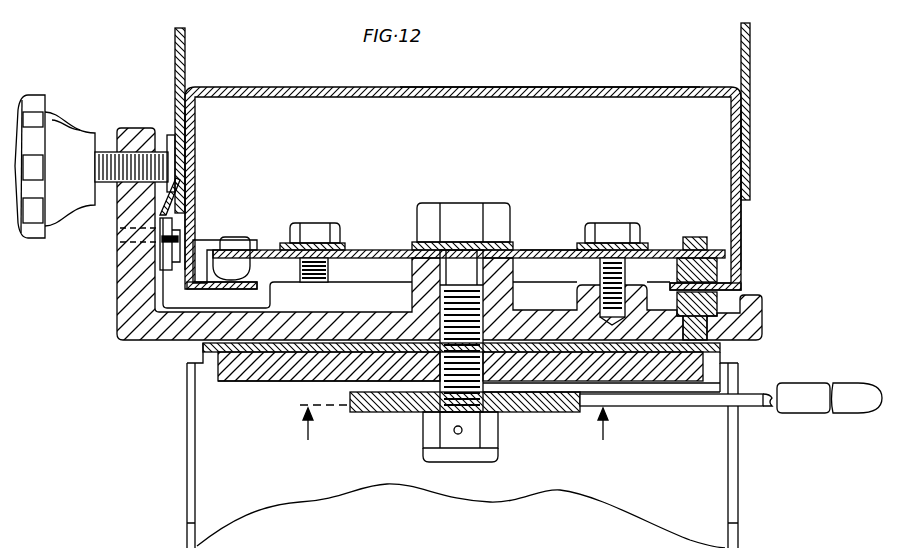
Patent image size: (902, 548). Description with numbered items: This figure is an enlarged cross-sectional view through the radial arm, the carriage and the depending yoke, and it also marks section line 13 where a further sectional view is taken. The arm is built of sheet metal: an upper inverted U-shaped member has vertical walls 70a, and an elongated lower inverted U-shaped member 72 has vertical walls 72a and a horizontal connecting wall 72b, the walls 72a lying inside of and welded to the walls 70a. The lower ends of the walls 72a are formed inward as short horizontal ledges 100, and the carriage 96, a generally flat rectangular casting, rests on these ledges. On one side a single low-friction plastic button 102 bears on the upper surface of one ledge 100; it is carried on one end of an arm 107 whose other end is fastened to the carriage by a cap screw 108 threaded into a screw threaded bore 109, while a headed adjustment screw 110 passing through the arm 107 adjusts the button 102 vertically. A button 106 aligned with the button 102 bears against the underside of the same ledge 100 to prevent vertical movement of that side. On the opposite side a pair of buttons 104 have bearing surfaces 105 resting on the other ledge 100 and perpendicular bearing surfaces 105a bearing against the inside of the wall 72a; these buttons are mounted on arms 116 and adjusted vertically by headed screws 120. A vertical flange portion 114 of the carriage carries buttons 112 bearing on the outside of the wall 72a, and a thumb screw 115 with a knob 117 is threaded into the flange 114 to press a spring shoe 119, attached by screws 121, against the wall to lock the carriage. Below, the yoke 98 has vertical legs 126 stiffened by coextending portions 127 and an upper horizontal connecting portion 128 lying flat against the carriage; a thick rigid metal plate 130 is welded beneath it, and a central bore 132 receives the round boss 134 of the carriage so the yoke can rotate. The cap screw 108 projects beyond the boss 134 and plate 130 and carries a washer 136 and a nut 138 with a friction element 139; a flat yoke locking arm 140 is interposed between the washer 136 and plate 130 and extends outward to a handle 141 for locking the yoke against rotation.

The section line 13- 13 is at (452, 433).
The vertical walls 70a is at (185, 52).
The lower inverted U-shaped member 72 is at (372, 87).
The vertical walls 72a is at (195, 186).
The horizontal connecting wall 72b is at (531, 87).
The carriage 96 is at (770, 322).
The yoke 98 is at (748, 467).
The horizontal ledges 100 is at (213, 289).
The single button 102 is at (717, 267).
The buttons 104 is at (207, 243).
The bearing surfaces 105 is at (243, 252).
The bearing surfaces 105a is at (222, 237).
The button 106 is at (742, 297).
The arm 107 is at (573, 248).
The cap screw 108 is at (467, 203).
The screw threaded bore 109 is at (440, 313).
The headed adjustment screw 110 is at (628, 223).
The buttons 112 is at (121, 298).
The vertical flange portion 114 is at (165, 262).
The thumb screw 115 is at (108, 152).
The arms 116 is at (358, 252).
The knob 117 is at (33, 95).
The spring shoe 119 is at (167, 140).
The headed screws 120 is at (338, 210).
The screws 121 is at (120, 235).
The vertical legs 126 is at (597, 506).
The coextending portions 127 is at (195, 463).
The horizontal connecting portion 128 is at (210, 353).
The rigid metal plate 130 is at (293, 383).
The central bore 132 is at (497, 374).
The boss 134 is at (428, 366).
The washer 136 is at (563, 412).
The nut 138 is at (495, 443).
The friction element 139 is at (454, 432).
The yoke locking arm 140 is at (680, 408).
The handle 141 is at (840, 415).